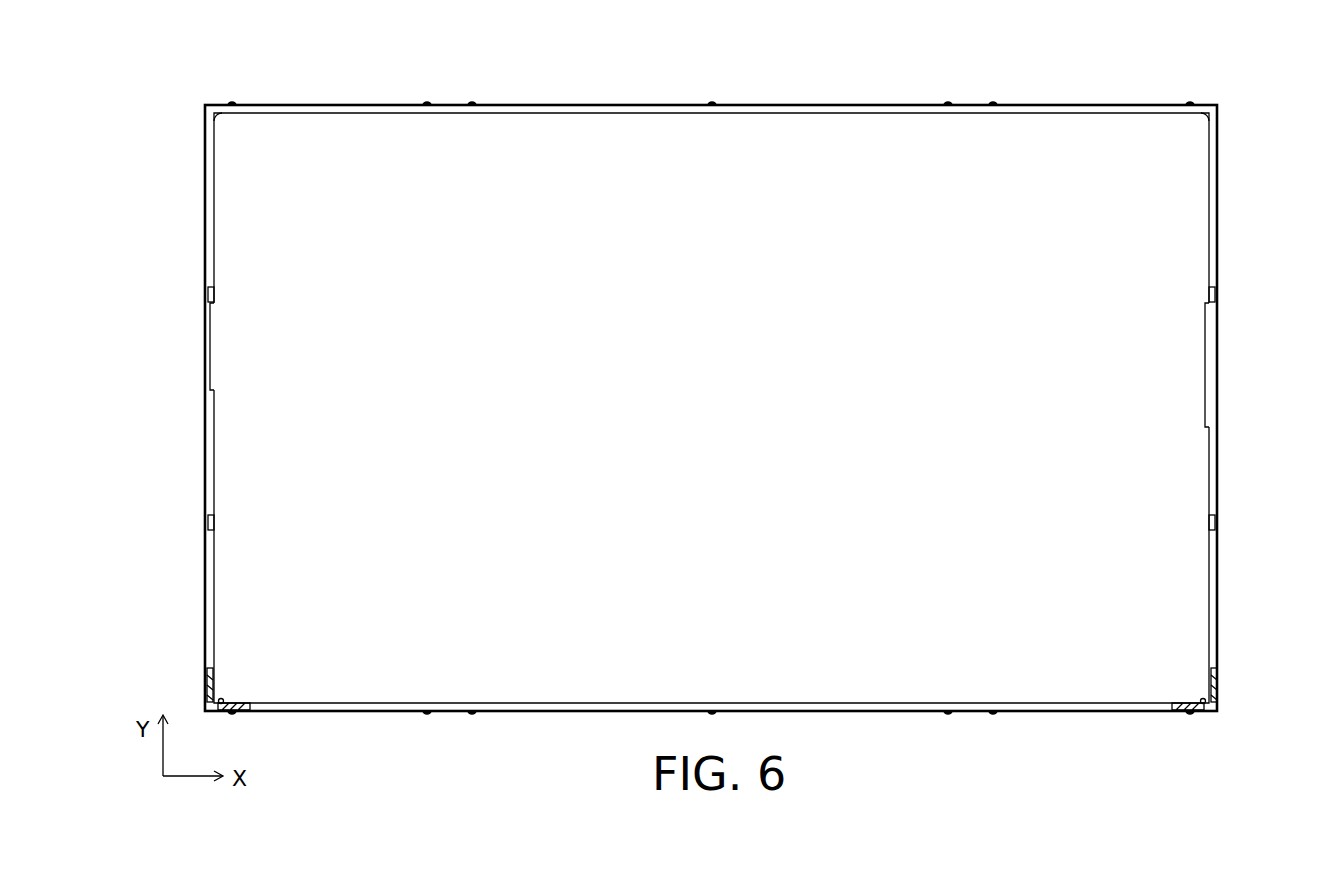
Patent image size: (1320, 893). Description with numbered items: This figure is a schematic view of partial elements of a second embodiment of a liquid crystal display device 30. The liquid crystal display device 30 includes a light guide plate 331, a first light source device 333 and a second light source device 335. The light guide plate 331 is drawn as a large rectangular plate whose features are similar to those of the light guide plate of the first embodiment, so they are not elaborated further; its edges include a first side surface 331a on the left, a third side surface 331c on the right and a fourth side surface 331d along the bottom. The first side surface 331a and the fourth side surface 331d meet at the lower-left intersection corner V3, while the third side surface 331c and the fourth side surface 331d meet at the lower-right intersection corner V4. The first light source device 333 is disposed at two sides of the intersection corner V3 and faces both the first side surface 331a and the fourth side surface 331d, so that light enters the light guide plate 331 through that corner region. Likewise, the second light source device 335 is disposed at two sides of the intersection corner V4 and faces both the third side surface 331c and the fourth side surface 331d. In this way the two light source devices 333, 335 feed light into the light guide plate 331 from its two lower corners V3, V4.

The liquid crystal display device 30 is at (712, 402).
The light guide plate 331 is at (521, 110).
The first side surface 331a is at (212, 458).
The third side surface 331c is at (1210, 395).
The fourth side surface 331d is at (1093, 706).
The first light source device 333 is at (204, 690).
The second light source device 335 is at (1220, 690).
The intersection corner V3 is at (223, 699).
The intersection corner V4 is at (1201, 699).